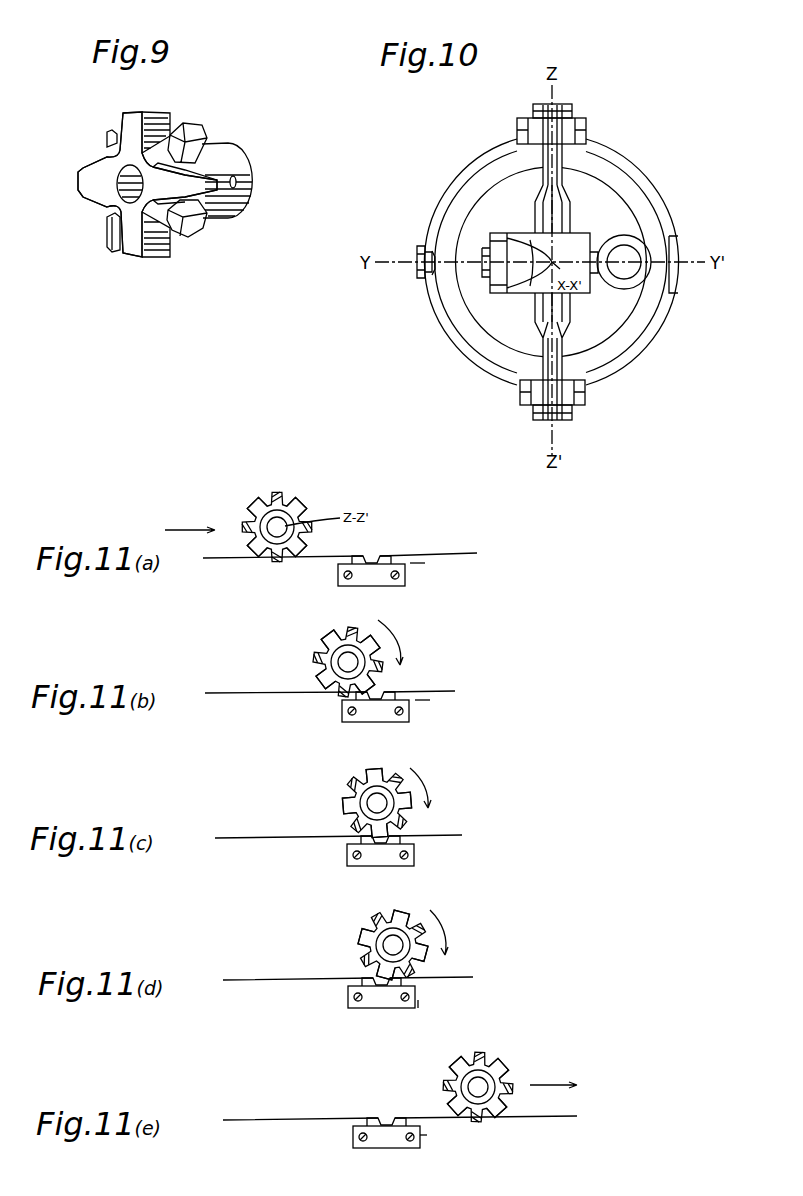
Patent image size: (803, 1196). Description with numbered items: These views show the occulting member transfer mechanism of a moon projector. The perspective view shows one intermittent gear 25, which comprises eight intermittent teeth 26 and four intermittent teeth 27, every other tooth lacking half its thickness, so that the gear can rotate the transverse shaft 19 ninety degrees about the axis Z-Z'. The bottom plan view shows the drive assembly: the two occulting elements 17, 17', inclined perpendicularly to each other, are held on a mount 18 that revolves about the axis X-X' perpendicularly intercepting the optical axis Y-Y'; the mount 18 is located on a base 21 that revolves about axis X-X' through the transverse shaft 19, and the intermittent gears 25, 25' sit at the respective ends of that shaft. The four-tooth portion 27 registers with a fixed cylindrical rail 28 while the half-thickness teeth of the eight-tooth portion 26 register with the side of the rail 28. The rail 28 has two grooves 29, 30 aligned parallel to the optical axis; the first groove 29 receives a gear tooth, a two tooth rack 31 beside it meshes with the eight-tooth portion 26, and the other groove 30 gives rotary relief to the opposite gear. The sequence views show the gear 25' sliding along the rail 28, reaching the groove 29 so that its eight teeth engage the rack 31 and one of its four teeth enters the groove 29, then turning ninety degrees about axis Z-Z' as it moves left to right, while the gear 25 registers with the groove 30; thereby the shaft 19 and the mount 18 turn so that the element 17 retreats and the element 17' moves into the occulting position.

In FIG. 10, the occulting element 17 is at (536, 281).
In FIG. 10, the occulting element 17' is at (604, 290).
In FIG. 10, the mount 18 is at (588, 236).
In FIG. 10, the transverse shaft 19 is at (560, 205).
In FIG. 10, the base 21 is at (493, 212).
In FIG. 9, the intermittent gear 25 is at (160, 215).
In FIG. 10, the intermittent gear 25 is at (573, 123).
In FIG. 11A, the intermittent gear 25 is at (304, 522).
In FIG. 11B, the intermittent gear 25 is at (306, 662).
In FIG. 11C, the intermittent gear 25 is at (332, 802).
In FIG. 11D, the intermittent gear 25 is at (357, 945).
In FIG. 11E, the intermittent gear 25 is at (513, 1081).
In FIG. 10, the intermittent gear 25' is at (549, 417).
In FIG. 9, the eight intermittent teeth 26 is at (200, 233).
In FIG. 11A, the eight intermittent teeth 26 is at (280, 561).
In FIG. 11B, the eight intermittent teeth 26 is at (343, 692).
In FIG. 11C, the eight intermittent teeth 26 is at (348, 819).
In FIG. 11D, the eight intermittent teeth 26 is at (411, 971).
In FIG. 11E, the eight intermittent teeth 26 is at (475, 1117).
In FIG. 9, the four intermittent teeth 27 is at (150, 252).
In FIG. 11A, the four intermittent teeth 27 is at (258, 555).
In FIG. 11B, the four intermittent teeth 27 is at (341, 683).
In FIG. 11C, the four intermittent teeth 27 is at (374, 833).
In FIG. 11D, the four intermittent teeth 27 is at (418, 957).
In FIG. 11E, the four intermittent teeth 27 is at (508, 1105).
In FIG. 10, the cylindrical rail 28 is at (660, 183).
In FIG. 11A, the cylindrical rail 28 is at (425, 563).
In FIG. 11B, the cylindrical rail 28 is at (418, 700).
In FIG. 11D, the cylindrical rail 28 is at (420, 1010).
In FIG. 11E, the cylindrical rail 28 is at (424, 1138).
In FIG. 10, the groove 29 is at (434, 258).
In FIG. 11A, the groove 29 is at (373, 553).
In FIG. 11B, the groove 29 is at (376, 692).
In FIG. 11C, the groove 29 is at (380, 840).
In FIG. 11D, the groove 29 is at (372, 990).
In FIG. 11E, the groove 29 is at (385, 1115).
In FIG. 10, the groove 30 is at (676, 250).
In FIG. 10, the two tooth rack 31 is at (419, 278).
In FIG. 11A, the two tooth rack 31 is at (382, 568).
In FIG. 11B, the two tooth rack 31 is at (378, 712).
In FIG. 11C, the two tooth rack 31 is at (412, 848).
In FIG. 11D, the two tooth rack 31 is at (386, 1003).
In FIG. 11E, the two tooth rack 31 is at (368, 1148).